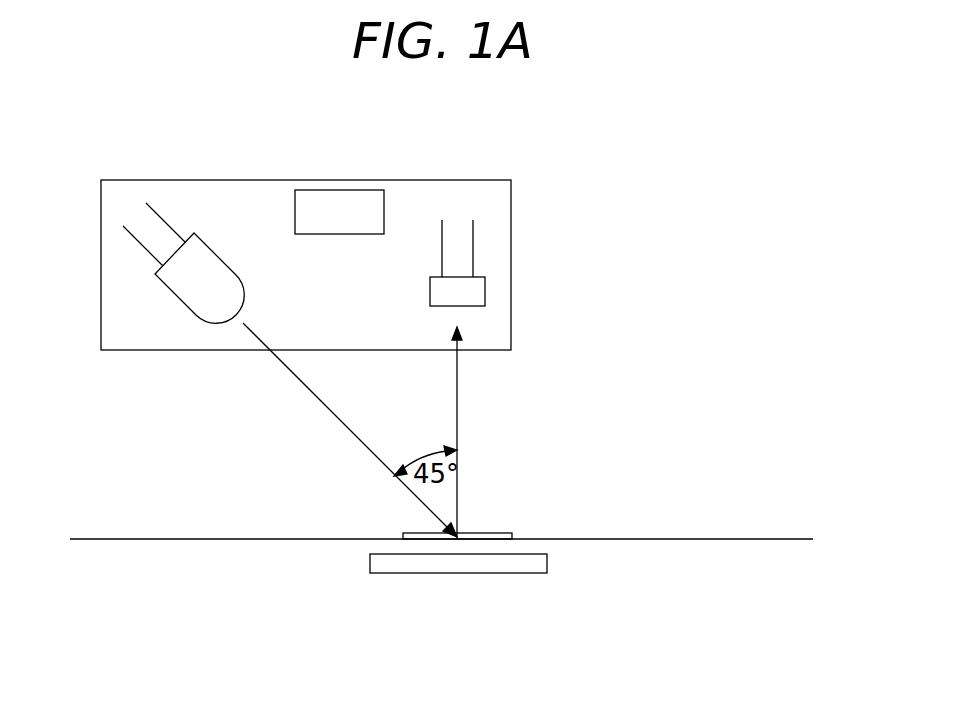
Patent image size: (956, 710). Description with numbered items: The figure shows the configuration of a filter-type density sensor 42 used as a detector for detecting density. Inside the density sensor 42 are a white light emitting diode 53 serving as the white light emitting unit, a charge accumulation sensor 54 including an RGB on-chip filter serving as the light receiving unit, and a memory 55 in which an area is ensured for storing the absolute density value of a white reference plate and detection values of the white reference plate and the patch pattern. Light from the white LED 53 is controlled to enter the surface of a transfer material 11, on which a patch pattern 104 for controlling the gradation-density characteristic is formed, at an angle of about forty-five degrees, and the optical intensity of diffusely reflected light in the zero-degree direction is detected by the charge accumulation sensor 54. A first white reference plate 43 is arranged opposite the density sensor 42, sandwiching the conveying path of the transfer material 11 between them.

The transfer material 11 is at (125, 539).
The filter-type density sensor 42 is at (459, 180).
The first white reference plate 43 is at (547, 565).
The white light emitting diode 53 is at (220, 253).
The charge accumulation sensor 54 is at (430, 292).
The memory 55 is at (321, 189).
The patch pattern 104 is at (499, 533).